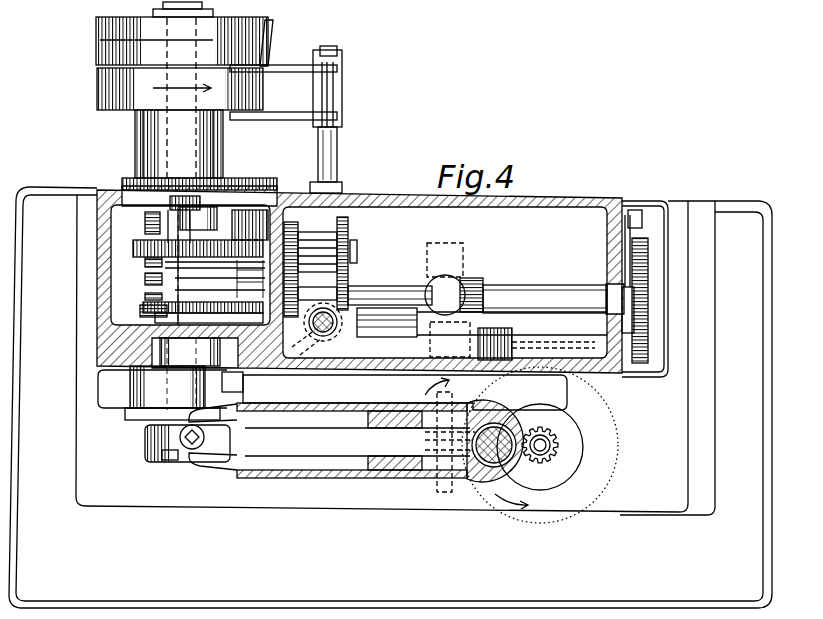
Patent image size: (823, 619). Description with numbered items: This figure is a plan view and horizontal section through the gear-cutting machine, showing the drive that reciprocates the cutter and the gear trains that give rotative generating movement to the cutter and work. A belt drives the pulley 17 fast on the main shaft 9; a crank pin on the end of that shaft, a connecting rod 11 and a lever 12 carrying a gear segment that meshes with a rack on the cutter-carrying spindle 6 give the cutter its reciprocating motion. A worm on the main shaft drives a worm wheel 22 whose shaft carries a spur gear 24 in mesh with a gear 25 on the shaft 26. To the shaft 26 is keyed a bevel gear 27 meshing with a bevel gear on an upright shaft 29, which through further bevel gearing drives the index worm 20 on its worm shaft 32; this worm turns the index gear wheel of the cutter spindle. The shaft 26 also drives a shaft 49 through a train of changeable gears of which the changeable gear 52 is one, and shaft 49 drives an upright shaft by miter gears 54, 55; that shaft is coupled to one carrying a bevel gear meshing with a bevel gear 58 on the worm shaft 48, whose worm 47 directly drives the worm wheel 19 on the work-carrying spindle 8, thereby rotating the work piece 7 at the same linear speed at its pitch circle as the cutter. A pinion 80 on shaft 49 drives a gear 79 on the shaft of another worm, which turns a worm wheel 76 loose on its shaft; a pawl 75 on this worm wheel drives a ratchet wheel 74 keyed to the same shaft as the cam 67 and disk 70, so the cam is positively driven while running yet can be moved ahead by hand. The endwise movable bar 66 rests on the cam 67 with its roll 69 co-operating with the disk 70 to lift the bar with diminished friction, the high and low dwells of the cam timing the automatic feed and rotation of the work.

The pulley 17 is at (96, 32).
The main shaft 9 is at (172, 129).
The worm wheel 22 is at (170, 222).
The spur gear 24 is at (148, 217).
The pawl 75 is at (208, 232).
The ratchet wheel 74 is at (244, 240).
The worm wheel 76 is at (150, 246).
The endwise movable bar 66 is at (152, 262).
The cam 67 is at (150, 278).
The disk 70 is at (150, 294).
The roll 69 is at (148, 311).
The gear 25 is at (152, 328).
The gear 79 is at (352, 226).
The bevel gear 58 is at (432, 270).
The pinion 80 is at (348, 299).
The miter gear 55 is at (432, 286).
The miter gear 54 is at (471, 281).
The shaft 49 is at (515, 293).
The changeable gear 52 is at (650, 256).
The shaft 26 is at (378, 320).
The bevel gear 27 is at (304, 346).
The upright shaft 29 is at (333, 332).
The worm 20 is at (492, 341).
The worm shaft 32 is at (560, 350).
The worm shaft 48 is at (476, 443).
The worm 47 is at (357, 440).
The connecting rod 11 is at (176, 460).
The lever 12 is at (307, 442).
The cutter-carrying spindle 6 is at (490, 465).
The work piece 7 is at (558, 432).
The work-carrying spindle 8 is at (553, 450).
The worm wheel 19 is at (617, 457).